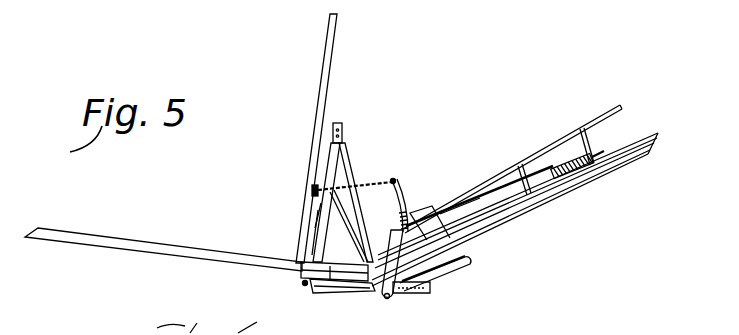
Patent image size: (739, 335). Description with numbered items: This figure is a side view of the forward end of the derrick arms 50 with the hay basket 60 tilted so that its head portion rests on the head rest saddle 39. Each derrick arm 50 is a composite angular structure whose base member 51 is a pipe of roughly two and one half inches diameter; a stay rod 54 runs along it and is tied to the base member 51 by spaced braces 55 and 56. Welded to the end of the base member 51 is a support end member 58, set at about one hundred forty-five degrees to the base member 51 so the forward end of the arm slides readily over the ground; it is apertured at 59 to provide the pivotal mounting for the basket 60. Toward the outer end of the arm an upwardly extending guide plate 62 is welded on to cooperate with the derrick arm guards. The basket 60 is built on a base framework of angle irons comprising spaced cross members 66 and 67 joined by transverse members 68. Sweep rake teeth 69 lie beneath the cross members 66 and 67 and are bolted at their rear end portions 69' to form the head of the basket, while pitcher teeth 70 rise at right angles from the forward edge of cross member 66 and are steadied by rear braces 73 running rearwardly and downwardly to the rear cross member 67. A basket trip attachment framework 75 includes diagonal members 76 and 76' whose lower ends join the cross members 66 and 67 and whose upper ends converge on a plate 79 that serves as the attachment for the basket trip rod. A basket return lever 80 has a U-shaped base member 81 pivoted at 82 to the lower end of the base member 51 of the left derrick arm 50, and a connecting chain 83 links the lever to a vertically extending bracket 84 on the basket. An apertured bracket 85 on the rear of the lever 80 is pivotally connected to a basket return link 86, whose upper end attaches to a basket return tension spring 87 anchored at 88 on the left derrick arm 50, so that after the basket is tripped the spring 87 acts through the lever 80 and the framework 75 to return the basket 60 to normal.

The head rest saddle 39 is at (420, 293).
The main derrick arm 50 is at (600, 162).
The base member 51 is at (525, 222).
The stay rod 54 is at (552, 146).
The brace 55 is at (520, 178).
The brace 56 is at (583, 137).
The support end member 58 is at (355, 291).
The pivot aperture 59 is at (302, 284).
The basket assembly 60 is at (325, 106).
The guide plate 62 is at (432, 214).
The cross member 66 is at (304, 268).
The rear cross member 67 is at (387, 299).
The transverse member 68 is at (328, 281).
The sweep rake teeth 69 is at (163, 248).
The rear end portion 69' is at (323, 294).
The pitcher teeth 70 is at (324, 57).
The rear brace 73 is at (352, 175).
The basket trip attachment framework 75 is at (346, 145).
The diagonally extending member 76 is at (359, 226).
The diagonally extending member 76' is at (295, 215).
The plate 79 is at (343, 126).
The basket return lever 80 is at (402, 183).
The U-shaped base member 81 is at (392, 255).
The pivotal connection 82 is at (399, 213).
The connecting chain 83 is at (362, 184).
The vertically extending bracket 84 is at (312, 191).
The apertured bracket 85 is at (411, 211).
The basket return link 86 is at (460, 205).
The basket return tension spring 87 is at (565, 183).
The anchor 88 is at (596, 158).